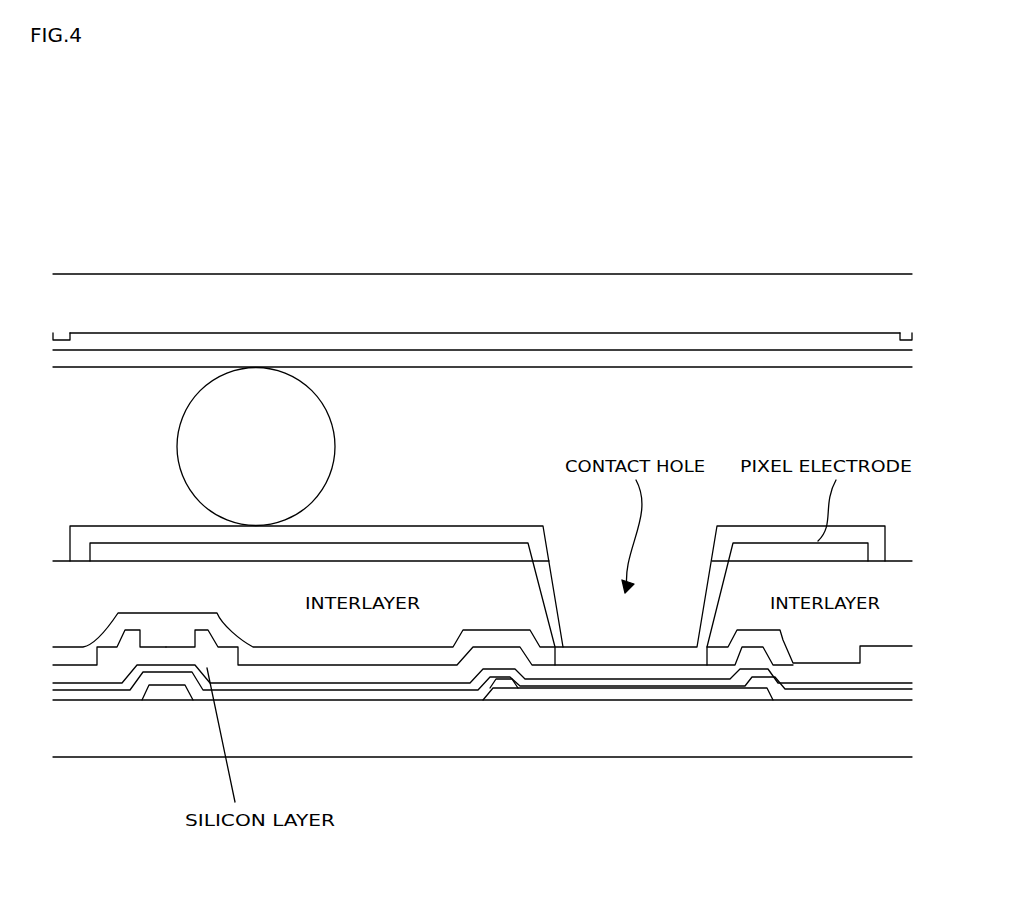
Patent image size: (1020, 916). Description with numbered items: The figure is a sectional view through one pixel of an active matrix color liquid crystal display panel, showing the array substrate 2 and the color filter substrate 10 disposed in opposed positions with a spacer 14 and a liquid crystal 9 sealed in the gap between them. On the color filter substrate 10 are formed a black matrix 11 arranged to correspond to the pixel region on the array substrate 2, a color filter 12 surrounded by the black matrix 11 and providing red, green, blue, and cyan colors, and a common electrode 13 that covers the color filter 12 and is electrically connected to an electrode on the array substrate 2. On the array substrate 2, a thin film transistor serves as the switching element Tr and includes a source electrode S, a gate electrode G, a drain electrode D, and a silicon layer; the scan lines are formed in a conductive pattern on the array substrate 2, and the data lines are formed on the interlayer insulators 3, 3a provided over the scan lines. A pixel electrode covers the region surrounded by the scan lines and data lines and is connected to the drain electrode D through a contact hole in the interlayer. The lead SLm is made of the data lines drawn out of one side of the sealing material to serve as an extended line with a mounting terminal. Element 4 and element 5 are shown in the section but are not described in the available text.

The array substrate 2 is at (352, 760).
The interlayer insulator 3 is at (431, 688).
The interlayer insulator 3a is at (688, 682).
The interlayer insulating film 4 is at (150, 613).
The wiring layer 5 is at (624, 694).
The liquid crystal 9 is at (434, 475).
The color filter substrate 10 is at (344, 272).
The black matrix 11 is at (58, 338).
The color filter 12 is at (586, 343).
The common electrode 13 is at (432, 365).
The spacer 14 is at (256, 446).
The switching element Tr is at (108, 610).
The source electrode S is at (107, 652).
The drain electrode D is at (403, 678).
The gate electrode G is at (155, 690).
The lead SLm is at (70, 673).